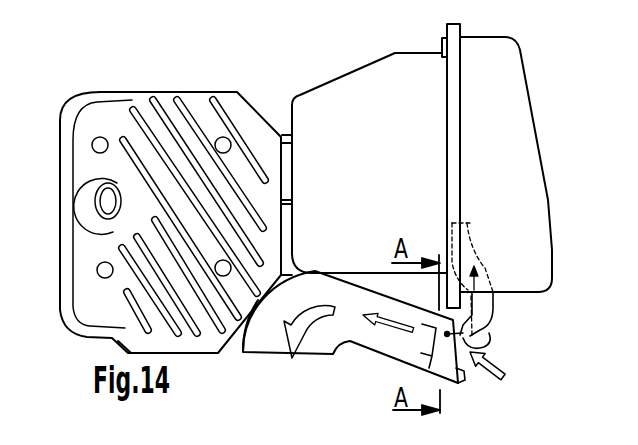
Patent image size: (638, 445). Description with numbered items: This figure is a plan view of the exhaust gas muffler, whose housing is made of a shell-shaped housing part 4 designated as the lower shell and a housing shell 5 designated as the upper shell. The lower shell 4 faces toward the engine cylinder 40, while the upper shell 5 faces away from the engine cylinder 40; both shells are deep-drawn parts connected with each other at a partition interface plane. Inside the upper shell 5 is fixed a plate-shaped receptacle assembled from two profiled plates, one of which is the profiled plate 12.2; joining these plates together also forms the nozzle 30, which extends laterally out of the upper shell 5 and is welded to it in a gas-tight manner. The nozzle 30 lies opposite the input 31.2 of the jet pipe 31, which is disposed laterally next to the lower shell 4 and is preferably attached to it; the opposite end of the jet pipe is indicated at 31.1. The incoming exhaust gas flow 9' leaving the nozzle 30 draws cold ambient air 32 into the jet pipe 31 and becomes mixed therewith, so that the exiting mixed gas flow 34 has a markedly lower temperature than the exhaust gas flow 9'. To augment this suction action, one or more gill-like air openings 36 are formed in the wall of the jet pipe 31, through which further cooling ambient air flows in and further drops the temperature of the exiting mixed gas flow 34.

The engine cylinder 40 is at (195, 101).
The housing part 4 is at (358, 213).
The housing shell 5 is at (520, 130).
The profiled plate 12.2 is at (490, 302).
The nozzle 30 is at (478, 348).
The exhaust gas flow 9' is at (446, 353).
The jet pipe 31 is at (361, 346).
The lever end 31.1 is at (253, 355).
The input 31.2 is at (461, 374).
The air openings 36 is at (424, 367).
The mixed gas flow 34 is at (304, 358).
The ambient air 32 is at (505, 378).